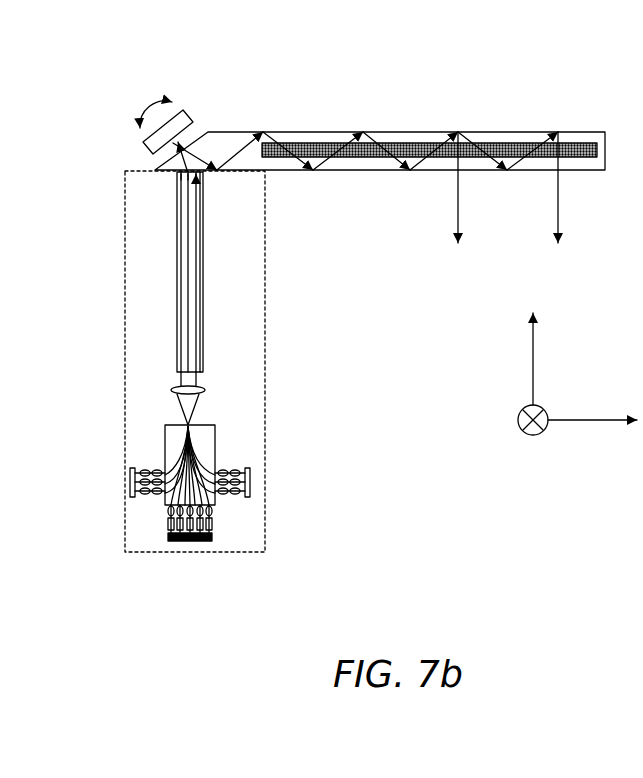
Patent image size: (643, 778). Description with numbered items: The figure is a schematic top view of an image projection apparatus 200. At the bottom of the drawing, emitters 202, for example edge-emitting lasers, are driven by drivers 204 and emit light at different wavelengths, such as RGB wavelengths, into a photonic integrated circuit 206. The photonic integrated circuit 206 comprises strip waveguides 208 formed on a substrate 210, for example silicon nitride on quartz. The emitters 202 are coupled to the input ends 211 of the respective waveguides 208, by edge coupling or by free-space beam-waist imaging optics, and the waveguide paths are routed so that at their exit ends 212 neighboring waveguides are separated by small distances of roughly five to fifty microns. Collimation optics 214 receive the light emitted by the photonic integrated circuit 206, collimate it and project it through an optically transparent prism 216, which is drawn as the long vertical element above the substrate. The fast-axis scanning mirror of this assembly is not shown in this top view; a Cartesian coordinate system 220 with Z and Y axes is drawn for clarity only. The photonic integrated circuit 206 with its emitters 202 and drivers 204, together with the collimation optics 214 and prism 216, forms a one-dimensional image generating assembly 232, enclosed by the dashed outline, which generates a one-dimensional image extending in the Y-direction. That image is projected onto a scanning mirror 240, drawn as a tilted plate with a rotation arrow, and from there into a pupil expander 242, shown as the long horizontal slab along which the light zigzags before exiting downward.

The image projection apparatus 200 is at (418, 417).
The emitters 202 is at (217, 524).
The drivers 204 is at (192, 541).
The photonic integrated circuit 206 is at (245, 442).
The strip waveguides 208 is at (215, 470).
The substrate 210 is at (165, 432).
The input ends 211 is at (167, 508).
The exit ends 212 is at (187, 423).
The collimation optics 214 is at (207, 390).
The prism 216 is at (177, 280).
The Cartesian coordinate system 220 is at (582, 358).
The 1D image generating assembly 232 is at (125, 372).
The scanning mirror 240 is at (188, 108).
The pupil expander 242 is at (333, 132).